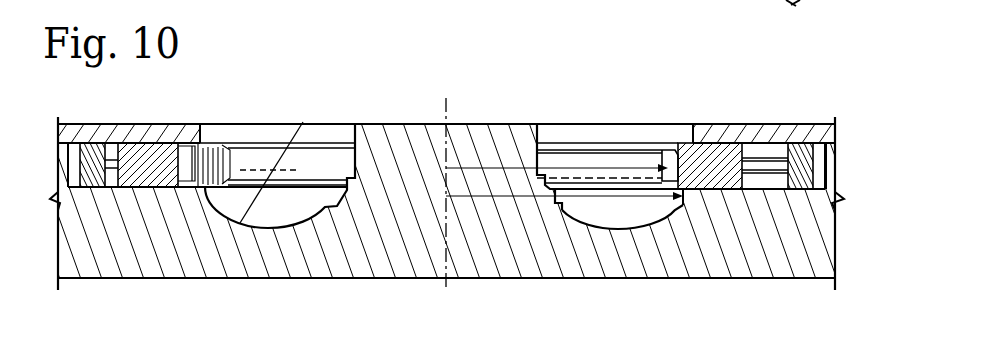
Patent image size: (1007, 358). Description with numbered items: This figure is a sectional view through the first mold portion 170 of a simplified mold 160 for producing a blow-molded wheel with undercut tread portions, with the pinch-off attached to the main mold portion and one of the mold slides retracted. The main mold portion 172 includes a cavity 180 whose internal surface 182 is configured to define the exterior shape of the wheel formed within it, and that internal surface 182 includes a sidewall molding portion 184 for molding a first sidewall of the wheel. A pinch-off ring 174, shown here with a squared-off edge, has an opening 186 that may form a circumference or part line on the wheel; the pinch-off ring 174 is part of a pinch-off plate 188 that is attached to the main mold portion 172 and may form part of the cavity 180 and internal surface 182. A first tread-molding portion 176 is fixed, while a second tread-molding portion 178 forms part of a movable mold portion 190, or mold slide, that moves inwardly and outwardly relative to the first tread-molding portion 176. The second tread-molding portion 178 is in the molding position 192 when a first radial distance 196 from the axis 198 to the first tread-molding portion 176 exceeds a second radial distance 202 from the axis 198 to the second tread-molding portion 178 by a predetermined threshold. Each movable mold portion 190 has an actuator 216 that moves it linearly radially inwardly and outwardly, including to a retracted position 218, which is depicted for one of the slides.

The simplified mold 160 is at (698, 50).
The first mold portion 170 is at (789, 68).
The main mold portion 172 is at (752, 280).
The pinch-off ring 174 is at (540, 114).
The first tread-molding portion 176 is at (232, 228).
The second tread-molding portion 178 is at (236, 157).
The cavity 180 is at (558, 122).
The internal surface 182 is at (312, 160).
The sidewall molding portion 184 is at (255, 217).
The opening 186 is at (341, 113).
The pinch-off plate 188 is at (768, 125).
The movable mold portion 190 is at (150, 150).
The molding position 192 is at (730, 127).
The first radial distance 196 is at (597, 197).
The axis 198 is at (448, 286).
The second radial distance 202 is at (577, 166).
The actuator 216 is at (92, 150).
The retracted position 218 is at (142, 198).